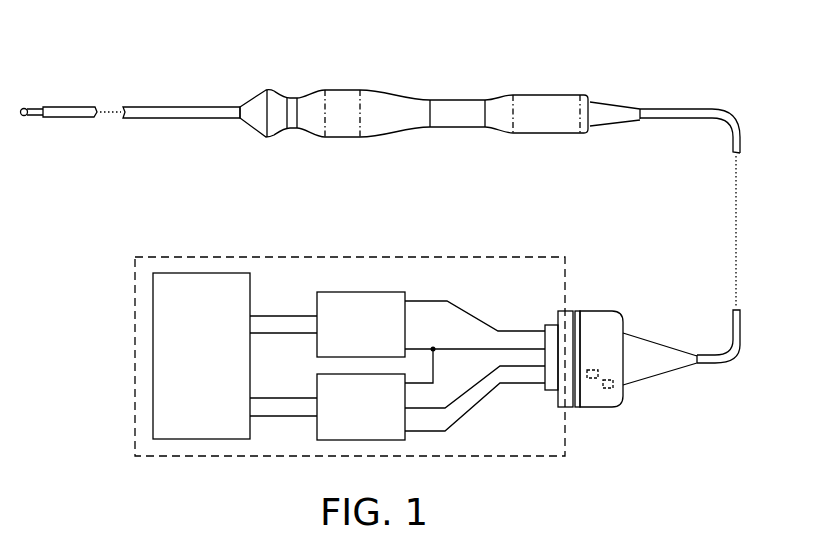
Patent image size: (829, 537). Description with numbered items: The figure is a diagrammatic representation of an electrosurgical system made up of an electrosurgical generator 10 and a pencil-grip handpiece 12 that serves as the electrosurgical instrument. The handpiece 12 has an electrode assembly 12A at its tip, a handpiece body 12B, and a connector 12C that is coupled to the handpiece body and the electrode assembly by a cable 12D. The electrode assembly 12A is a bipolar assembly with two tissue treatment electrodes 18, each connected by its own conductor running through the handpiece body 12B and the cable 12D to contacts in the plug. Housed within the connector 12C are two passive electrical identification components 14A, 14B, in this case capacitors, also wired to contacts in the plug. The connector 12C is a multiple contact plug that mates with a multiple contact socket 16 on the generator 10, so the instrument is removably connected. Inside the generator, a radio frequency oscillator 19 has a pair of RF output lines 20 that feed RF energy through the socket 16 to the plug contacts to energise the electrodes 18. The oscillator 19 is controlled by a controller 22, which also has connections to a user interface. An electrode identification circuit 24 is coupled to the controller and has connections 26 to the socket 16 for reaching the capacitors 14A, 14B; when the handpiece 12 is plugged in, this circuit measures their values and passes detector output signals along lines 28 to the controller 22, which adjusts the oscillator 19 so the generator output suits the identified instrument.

The generator 10 is at (192, 257).
The pencil-grip handpiece 12 is at (456, 60).
The electrode assembly 12A is at (172, 107).
The handpiece body 12B is at (340, 90).
The connector 12C is at (605, 311).
The cable 12D is at (703, 110).
The passive electrical identification component 14A is at (592, 379).
The passive electrical identification component 14B is at (615, 386).
The multiple contact socket 16 is at (573, 311).
The tissue treatment electrodes 18 is at (27, 107).
The radio frequency oscillator 19 is at (383, 292).
The RF output lines 20 is at (522, 324).
The controller 22 is at (153, 286).
The electrode identification circuit 24 is at (387, 441).
The connections 26 is at (522, 394).
The lines 28 is at (285, 424).